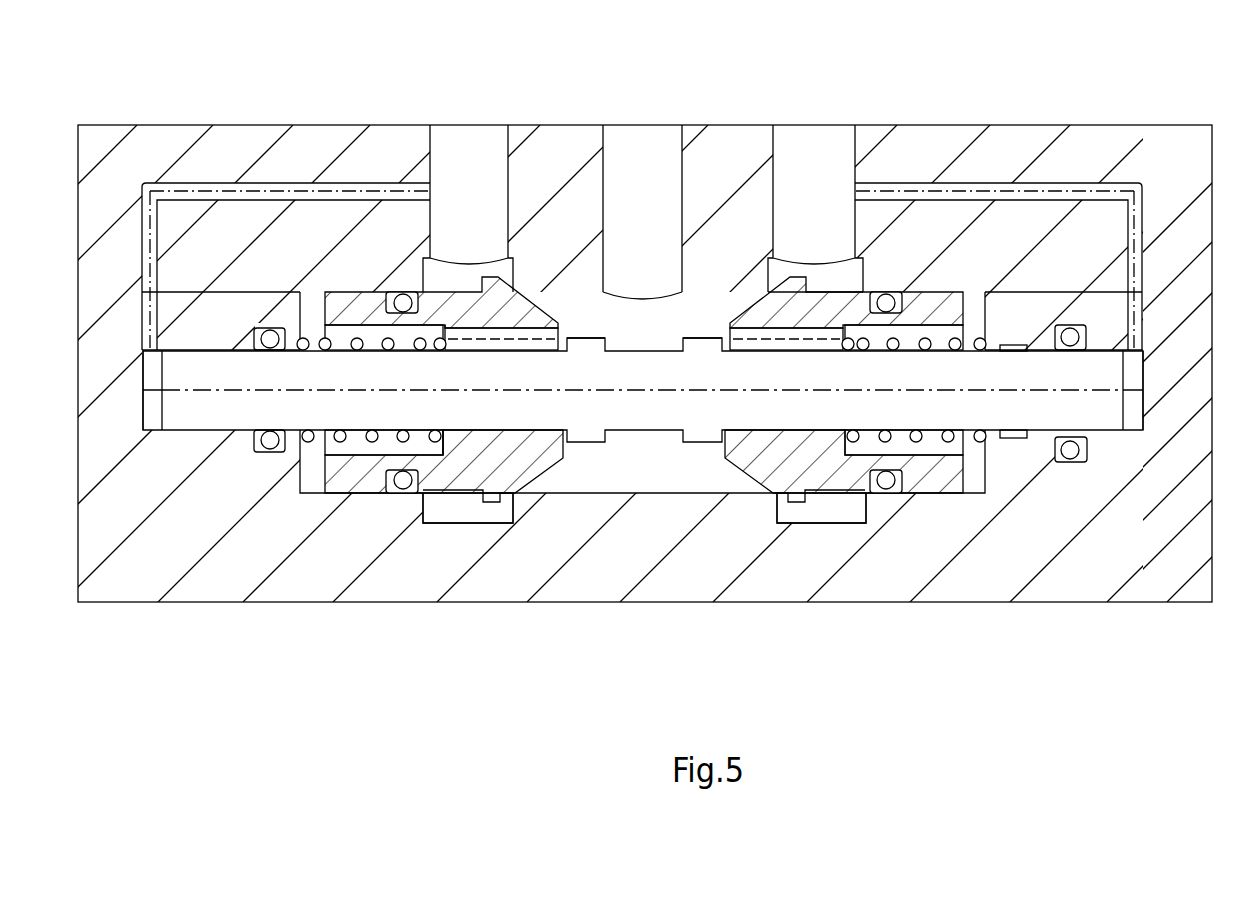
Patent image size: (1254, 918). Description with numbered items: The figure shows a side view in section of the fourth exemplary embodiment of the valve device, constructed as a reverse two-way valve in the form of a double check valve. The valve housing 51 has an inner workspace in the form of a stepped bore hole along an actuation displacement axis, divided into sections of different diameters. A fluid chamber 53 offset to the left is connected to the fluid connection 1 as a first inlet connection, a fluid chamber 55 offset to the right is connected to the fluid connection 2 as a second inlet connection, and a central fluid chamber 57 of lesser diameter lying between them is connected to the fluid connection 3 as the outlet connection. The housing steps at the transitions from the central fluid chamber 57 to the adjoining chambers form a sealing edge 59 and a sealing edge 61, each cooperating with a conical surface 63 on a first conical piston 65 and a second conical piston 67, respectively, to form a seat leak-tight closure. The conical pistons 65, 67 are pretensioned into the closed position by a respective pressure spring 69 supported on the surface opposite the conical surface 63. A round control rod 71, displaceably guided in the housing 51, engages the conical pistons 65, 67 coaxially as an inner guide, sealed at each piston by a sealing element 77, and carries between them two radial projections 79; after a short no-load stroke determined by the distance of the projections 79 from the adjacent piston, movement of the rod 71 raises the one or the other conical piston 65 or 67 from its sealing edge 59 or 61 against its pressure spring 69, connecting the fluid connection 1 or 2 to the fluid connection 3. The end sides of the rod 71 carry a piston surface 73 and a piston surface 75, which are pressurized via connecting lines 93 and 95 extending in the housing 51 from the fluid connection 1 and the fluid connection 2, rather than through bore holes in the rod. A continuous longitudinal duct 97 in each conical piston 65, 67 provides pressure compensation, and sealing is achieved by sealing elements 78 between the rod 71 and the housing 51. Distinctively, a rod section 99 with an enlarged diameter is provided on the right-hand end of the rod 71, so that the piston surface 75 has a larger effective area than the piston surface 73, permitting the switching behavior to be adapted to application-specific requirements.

The fluid connection 1 is at (430, 137).
The fluid connection 2 is at (780, 135).
The fluid connection 3 is at (602, 140).
The valve housing 51 is at (1112, 145).
The fluid chamber 53 is at (455, 508).
The fluid chamber 55 is at (827, 510).
The central fluid chamber 57 is at (595, 468).
The sealing edge 59 is at (470, 452).
The sealing edge 61 is at (773, 262).
The conical surface 63 is at (535, 293).
The first conical piston 65 is at (517, 492).
The second conical piston 67 is at (780, 453).
The pressure spring 69 is at (367, 437).
The control rod 71 is at (650, 413).
The piston surface 73 is at (158, 413).
The piston surface 75 is at (1125, 418).
The sealing element 77 is at (400, 477).
The sealing element 78 is at (262, 448).
The radial projection 79 is at (700, 340).
The connecting line 93 is at (310, 185).
The connecting line 95 is at (992, 185).
The longitudinal duct 97 is at (495, 333).
The rod section 99 is at (1040, 427).